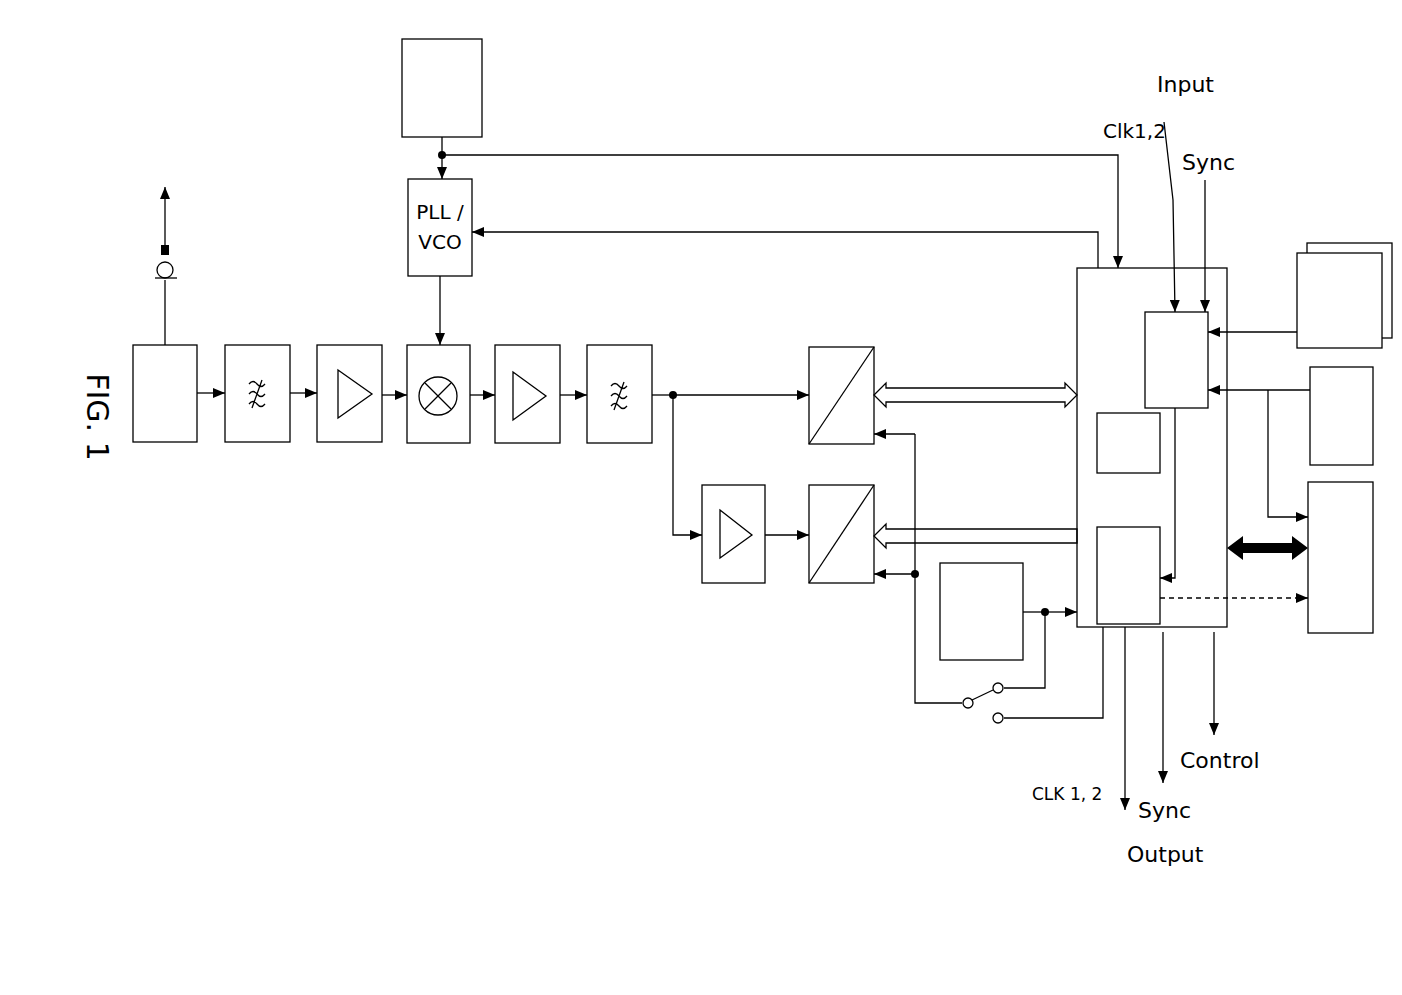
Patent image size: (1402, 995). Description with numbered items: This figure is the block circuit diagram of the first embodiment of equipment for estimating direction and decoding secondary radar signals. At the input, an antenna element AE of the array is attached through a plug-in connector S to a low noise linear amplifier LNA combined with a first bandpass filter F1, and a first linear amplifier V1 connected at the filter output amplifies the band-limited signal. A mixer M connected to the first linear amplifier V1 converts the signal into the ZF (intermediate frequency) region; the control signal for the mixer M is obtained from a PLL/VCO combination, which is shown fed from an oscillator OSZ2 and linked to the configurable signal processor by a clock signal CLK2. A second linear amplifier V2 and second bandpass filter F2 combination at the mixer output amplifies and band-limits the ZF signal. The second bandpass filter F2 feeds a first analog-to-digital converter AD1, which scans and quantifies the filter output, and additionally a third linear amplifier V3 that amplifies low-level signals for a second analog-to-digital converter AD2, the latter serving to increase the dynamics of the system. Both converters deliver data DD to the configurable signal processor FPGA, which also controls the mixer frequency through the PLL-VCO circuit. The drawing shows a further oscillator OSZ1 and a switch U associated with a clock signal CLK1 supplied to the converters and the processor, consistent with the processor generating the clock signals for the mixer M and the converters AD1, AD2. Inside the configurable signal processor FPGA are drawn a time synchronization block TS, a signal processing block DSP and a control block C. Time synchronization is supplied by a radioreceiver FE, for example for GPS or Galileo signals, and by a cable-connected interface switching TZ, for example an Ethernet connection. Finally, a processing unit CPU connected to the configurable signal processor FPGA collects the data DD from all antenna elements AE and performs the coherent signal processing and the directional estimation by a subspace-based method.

The antenna element AE is at (148, 244).
The plug-in connector S is at (173, 277).
The low noise linear amplifier LNA is at (165, 407).
The first bandpass filter F1 is at (277, 370).
The first linear amplifier V1 is at (373, 360).
The mixer M is at (460, 423).
The second linear amplifier V2 is at (547, 362).
The second bandpass filter F2 is at (645, 372).
The second oscillator 54 MHz OSZ2 is at (477, 65).
The second clock signal CLK2 is at (797, 152).
The third linear amplifier V3 is at (752, 573).
The first analog-to-digital converter AD1 is at (873, 313).
The second analog-to-digital converter AD2 is at (838, 573).
The data DD is at (1010, 400).
The first oscillator 108 MHz OSZ1 is at (955, 625).
The first clock signal CLK1 is at (1050, 595).
The switch U is at (985, 700).
The configurable signal processor FPGA is at (1097, 340).
The time synchronization unit TS is at (1150, 327).
The signal processor DSP is at (1117, 437).
The controller C is at (1140, 560).
The radioreceiver FE is at (1305, 263).
The interface switching TZ is at (1322, 388).
The processing unit CPU is at (1357, 623).